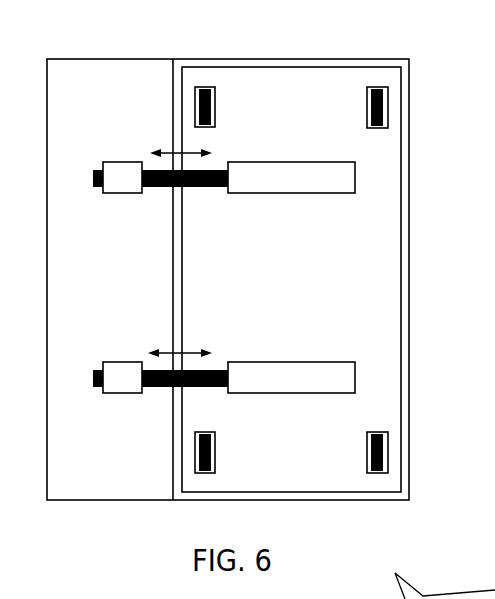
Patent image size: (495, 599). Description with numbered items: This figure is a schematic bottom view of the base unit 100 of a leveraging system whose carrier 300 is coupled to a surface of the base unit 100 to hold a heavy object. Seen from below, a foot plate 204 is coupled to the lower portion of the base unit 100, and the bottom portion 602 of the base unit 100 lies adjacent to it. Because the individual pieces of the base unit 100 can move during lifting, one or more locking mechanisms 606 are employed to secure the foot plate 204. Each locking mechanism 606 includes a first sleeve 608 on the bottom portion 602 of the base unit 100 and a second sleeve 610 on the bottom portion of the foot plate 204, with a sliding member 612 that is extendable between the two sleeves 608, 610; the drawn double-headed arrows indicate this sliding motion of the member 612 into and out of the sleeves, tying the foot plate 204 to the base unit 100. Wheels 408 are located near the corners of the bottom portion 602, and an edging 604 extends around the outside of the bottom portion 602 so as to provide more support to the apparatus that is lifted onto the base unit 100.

The base unit 100 is at (128, 84).
The carrier 300 is at (327, 85).
The foot plate 204 is at (88, 265).
The wheels 408 is at (205, 87).
The bottom portion 602 is at (268, 291).
The edging 604 is at (405, 248).
The locking mechanism 606 is at (233, 142).
The first sleeve 608 is at (268, 187).
The second sleeve 610 is at (122, 175).
The sliding member 612 is at (209, 188).